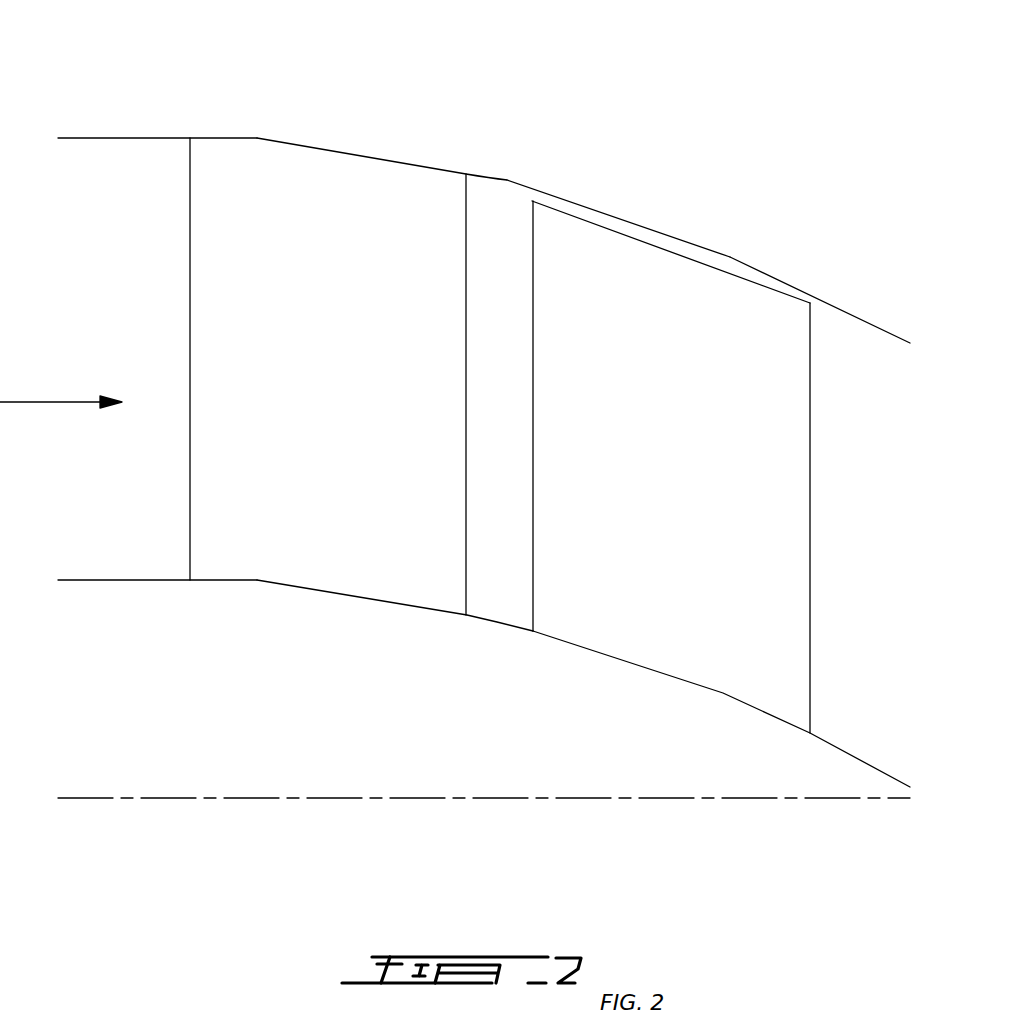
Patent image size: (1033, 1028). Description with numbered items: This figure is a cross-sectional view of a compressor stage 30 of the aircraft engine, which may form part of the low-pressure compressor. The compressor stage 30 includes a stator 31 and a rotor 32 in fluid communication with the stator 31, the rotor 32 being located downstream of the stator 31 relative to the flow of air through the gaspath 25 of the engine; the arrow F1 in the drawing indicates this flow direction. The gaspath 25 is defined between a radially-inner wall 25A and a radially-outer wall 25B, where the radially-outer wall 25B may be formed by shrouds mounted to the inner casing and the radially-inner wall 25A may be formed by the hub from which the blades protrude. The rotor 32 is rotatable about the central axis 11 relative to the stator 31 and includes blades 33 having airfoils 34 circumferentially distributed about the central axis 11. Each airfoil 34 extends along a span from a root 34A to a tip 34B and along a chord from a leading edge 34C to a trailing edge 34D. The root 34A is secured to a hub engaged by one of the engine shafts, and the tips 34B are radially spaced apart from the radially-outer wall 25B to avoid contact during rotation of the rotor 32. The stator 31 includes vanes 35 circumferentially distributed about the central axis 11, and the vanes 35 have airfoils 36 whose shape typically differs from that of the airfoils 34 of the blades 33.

The central axis 11 is at (575, 800).
The gaspath 25 is at (94, 291).
The radially-inner wall 25A is at (128, 580).
The radially-outer wall 25B is at (120, 138).
The compressor stage 30 is at (708, 401).
The stator 31 is at (352, 143).
The rotor 32 is at (708, 225).
The blades 33 is at (785, 382).
The airfoils 34 is at (721, 494).
The root 34A is at (632, 660).
The tip 34B is at (673, 255).
The leading edge 34C is at (533, 378).
The trailing edge 34D is at (810, 543).
The vanes 35 is at (438, 268).
The airfoils 36 is at (410, 203).
The airflow direction F1 is at (55, 403).